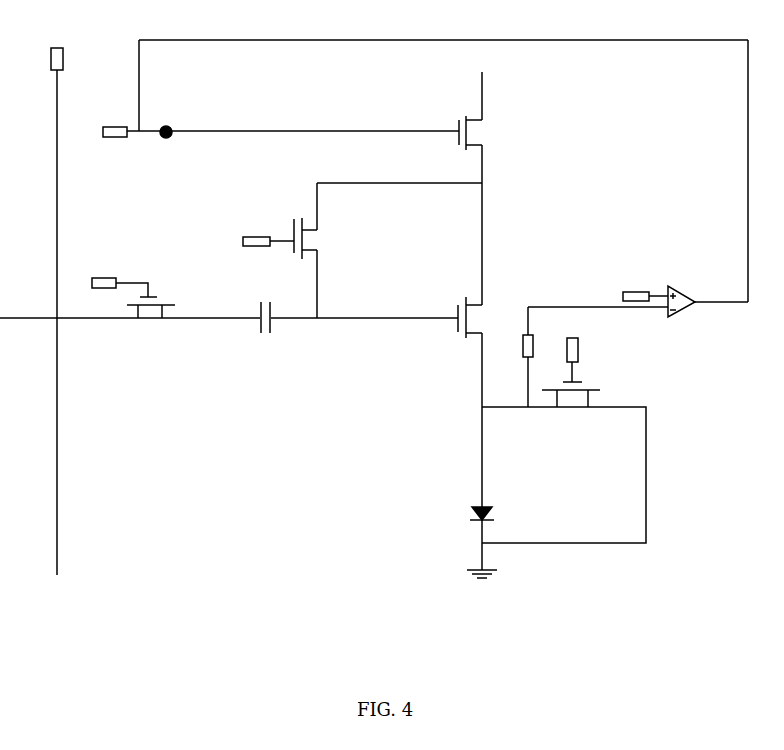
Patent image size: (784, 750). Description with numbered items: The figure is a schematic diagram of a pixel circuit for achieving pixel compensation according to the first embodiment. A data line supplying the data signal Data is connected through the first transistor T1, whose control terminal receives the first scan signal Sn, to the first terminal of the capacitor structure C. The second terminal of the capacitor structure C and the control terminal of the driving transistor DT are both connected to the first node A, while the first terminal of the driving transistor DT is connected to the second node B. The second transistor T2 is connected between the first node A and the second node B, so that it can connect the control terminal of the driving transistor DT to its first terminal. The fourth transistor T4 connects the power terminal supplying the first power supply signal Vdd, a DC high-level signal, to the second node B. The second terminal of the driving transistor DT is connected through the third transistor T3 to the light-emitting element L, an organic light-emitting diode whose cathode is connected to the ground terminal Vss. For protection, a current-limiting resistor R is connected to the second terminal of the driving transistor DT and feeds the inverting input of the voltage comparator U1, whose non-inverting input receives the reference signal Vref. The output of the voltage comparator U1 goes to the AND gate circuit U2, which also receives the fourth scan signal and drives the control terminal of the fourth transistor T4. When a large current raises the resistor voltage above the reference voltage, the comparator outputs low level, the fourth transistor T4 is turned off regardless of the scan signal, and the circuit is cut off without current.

The data signal Data is at (62, 302).
The first scan signal Sn is at (120, 279).
The first transistor T1 is at (151, 320).
The second transistor T2 is at (315, 221).
The third transistor T3 is at (571, 407).
The fourth transistor T4 is at (482, 210).
The driving transistor DT is at (482, 402).
The capacitor structure C is at (266, 334).
The first node A is at (314, 297).
The second node B is at (406, 186).
The current-limiting resistor R is at (519, 357).
The light-emitting element L is at (471, 538).
The voltage comparator U1 is at (638, 297).
The AND gate circuit U2 is at (165, 123).
The first power supply signal Vdd is at (483, 87).
The ground terminal Vss is at (482, 587).
The reference signal Vref is at (643, 287).